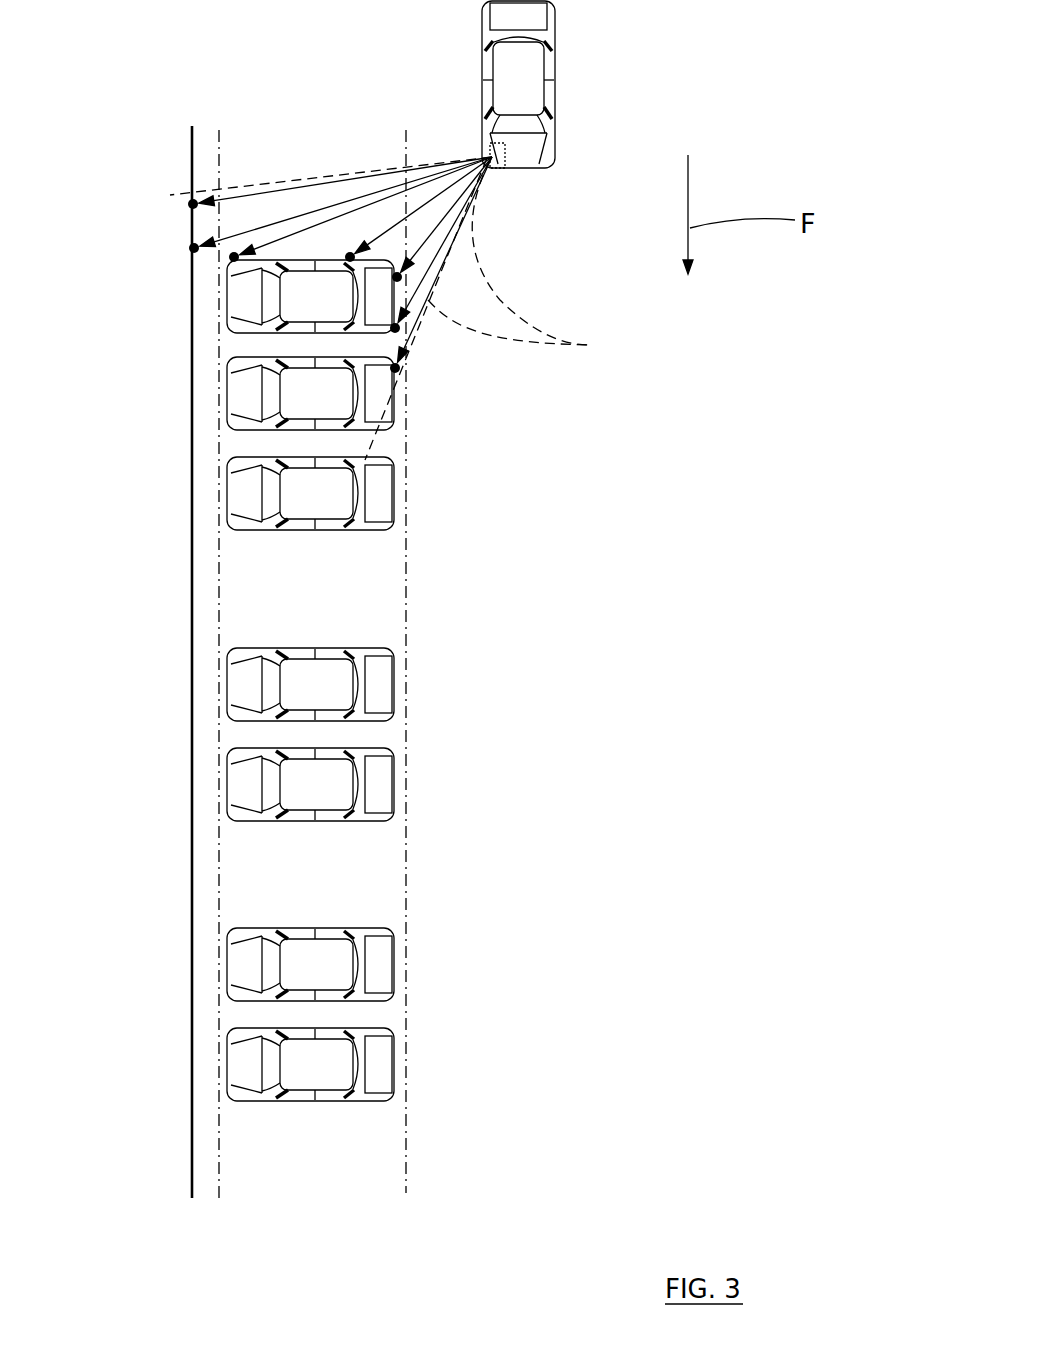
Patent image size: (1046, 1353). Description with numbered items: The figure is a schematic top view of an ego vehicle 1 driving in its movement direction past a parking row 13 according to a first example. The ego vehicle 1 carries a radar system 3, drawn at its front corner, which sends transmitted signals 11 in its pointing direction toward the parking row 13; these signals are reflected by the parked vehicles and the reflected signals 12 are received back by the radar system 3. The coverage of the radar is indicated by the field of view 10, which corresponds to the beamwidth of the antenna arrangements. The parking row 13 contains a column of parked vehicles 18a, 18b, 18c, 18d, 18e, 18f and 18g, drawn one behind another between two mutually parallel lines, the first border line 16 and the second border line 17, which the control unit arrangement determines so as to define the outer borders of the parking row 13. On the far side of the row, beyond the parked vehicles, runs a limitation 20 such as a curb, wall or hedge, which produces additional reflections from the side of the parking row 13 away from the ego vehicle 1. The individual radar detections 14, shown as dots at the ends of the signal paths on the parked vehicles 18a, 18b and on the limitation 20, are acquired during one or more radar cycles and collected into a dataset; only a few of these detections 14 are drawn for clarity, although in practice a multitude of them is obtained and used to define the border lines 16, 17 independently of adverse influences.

The ego vehicle 1 is at (523, 70).
The radar system 3 is at (503, 167).
The field of view 10 is at (404, 308).
The transmitted signals 11 is at (433, 261).
The reflected signals 12 is at (295, 286).
The parking row 13 is at (351, 1135).
The radar detections 14 is at (193, 204).
The first border line 16 is at (407, 1027).
The second border line 17 is at (219, 1145).
The parked vehicle 18a is at (296, 309).
The parked vehicle 18b is at (296, 406).
The parked vehicle 18c is at (296, 506).
The parked vehicle 18d is at (296, 697).
The parked vehicle 18e is at (296, 797).
The parked vehicle 18f is at (296, 977).
The parked vehicle 18g is at (296, 1077).
The limitation 20 is at (192, 643).